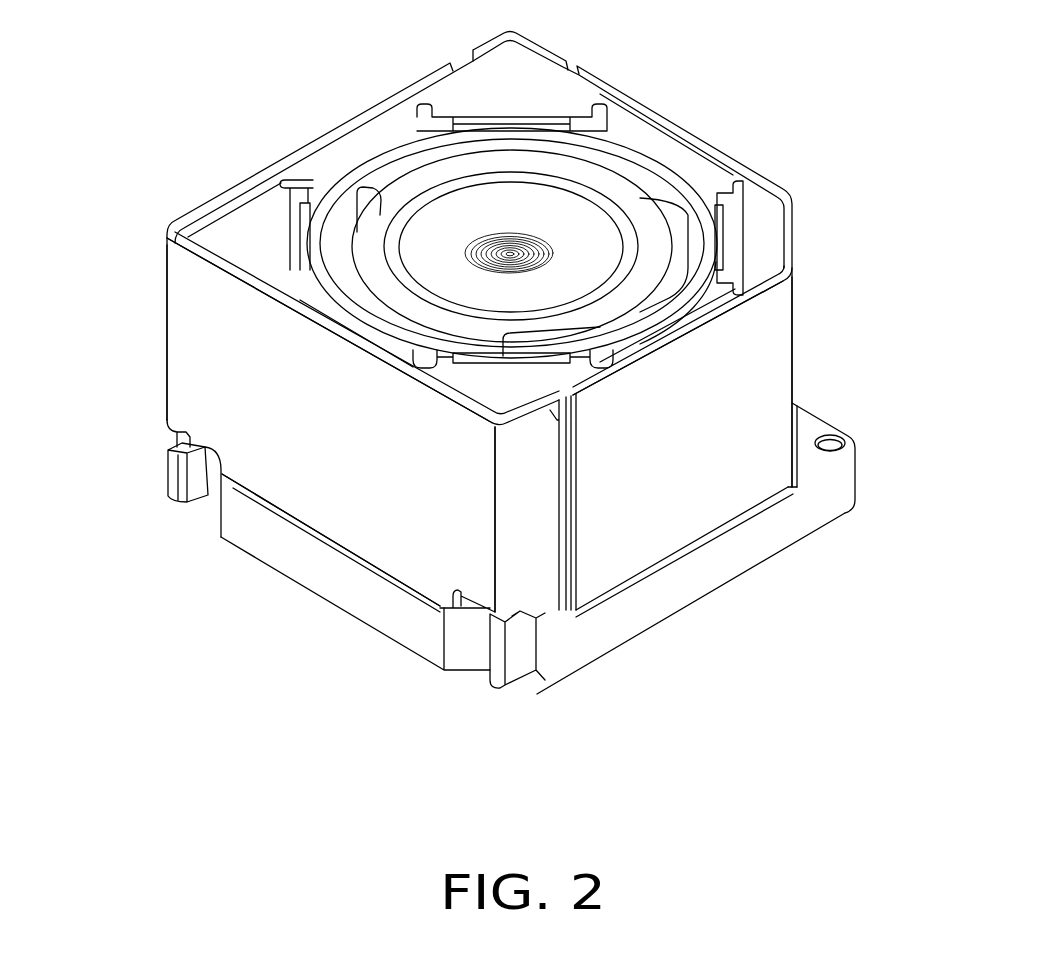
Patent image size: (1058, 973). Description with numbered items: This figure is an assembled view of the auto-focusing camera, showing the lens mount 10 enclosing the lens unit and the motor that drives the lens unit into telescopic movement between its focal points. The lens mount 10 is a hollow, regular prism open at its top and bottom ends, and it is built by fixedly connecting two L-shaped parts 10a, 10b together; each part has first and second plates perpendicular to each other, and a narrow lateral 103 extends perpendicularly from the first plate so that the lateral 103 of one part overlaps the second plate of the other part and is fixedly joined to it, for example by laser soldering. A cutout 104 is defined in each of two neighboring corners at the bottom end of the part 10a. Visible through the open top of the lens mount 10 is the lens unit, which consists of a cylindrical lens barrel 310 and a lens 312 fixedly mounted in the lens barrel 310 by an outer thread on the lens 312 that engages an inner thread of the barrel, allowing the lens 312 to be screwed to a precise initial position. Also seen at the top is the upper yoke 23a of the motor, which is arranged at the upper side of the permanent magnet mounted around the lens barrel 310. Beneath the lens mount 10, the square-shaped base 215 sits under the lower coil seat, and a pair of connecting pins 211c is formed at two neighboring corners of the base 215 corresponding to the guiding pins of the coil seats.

The lens mount 10 is at (758, 363).
The L-shaped part 10a is at (383, 525).
The L-shaped part 10b is at (640, 538).
The lateral 103 is at (545, 578).
The cutout 104 is at (172, 436).
The connecting pin 211c is at (190, 482).
The base 215 is at (782, 523).
The upper yoke 23a is at (763, 228).
The lens barrel 310 is at (592, 146).
The lens 312 is at (666, 226).